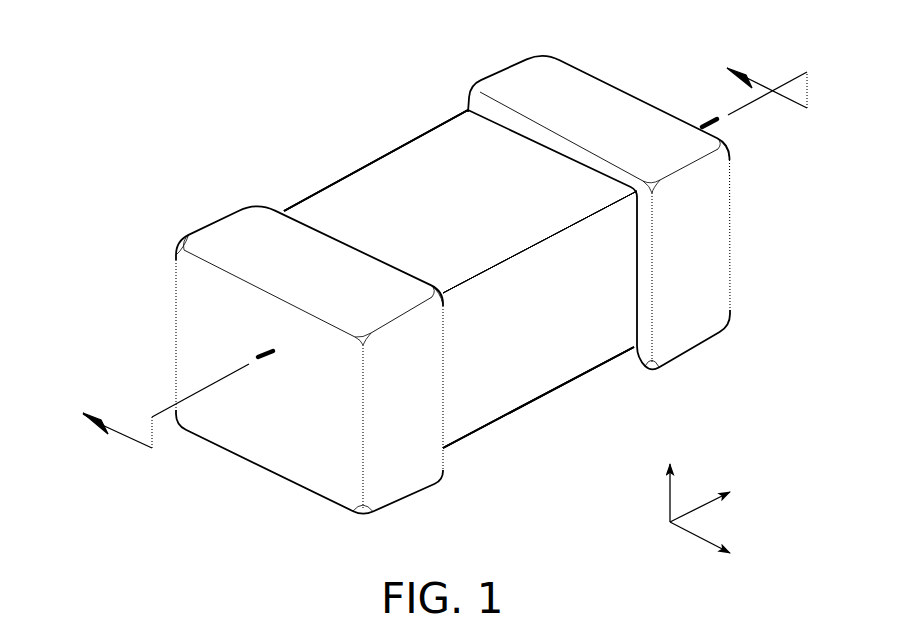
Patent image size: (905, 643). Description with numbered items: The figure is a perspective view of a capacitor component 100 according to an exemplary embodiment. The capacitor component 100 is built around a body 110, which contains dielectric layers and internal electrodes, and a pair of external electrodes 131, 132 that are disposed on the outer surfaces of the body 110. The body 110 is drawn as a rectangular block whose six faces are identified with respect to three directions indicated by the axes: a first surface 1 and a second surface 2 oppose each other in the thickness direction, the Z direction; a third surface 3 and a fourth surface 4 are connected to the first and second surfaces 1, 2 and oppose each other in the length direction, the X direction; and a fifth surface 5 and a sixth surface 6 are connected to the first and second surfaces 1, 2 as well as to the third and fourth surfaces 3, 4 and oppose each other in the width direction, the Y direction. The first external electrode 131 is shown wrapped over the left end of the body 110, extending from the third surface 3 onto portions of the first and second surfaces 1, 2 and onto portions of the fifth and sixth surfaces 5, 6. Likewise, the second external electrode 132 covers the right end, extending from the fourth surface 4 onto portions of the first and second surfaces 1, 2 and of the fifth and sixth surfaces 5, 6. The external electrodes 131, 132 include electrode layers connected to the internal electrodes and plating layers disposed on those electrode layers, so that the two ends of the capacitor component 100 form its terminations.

The capacitor component 100 is at (239, 63).
The body 110 is at (323, 218).
The first external electrode 131 is at (297, 332).
The second external electrode 132 is at (633, 187).
The first surface 1 is at (497, 370).
The second surface 2 is at (470, 170).
The third surface 3 is at (275, 415).
The fourth surface 4 is at (675, 225).
The fifth surface 5 is at (532, 330).
The sixth surface 6 is at (415, 190).